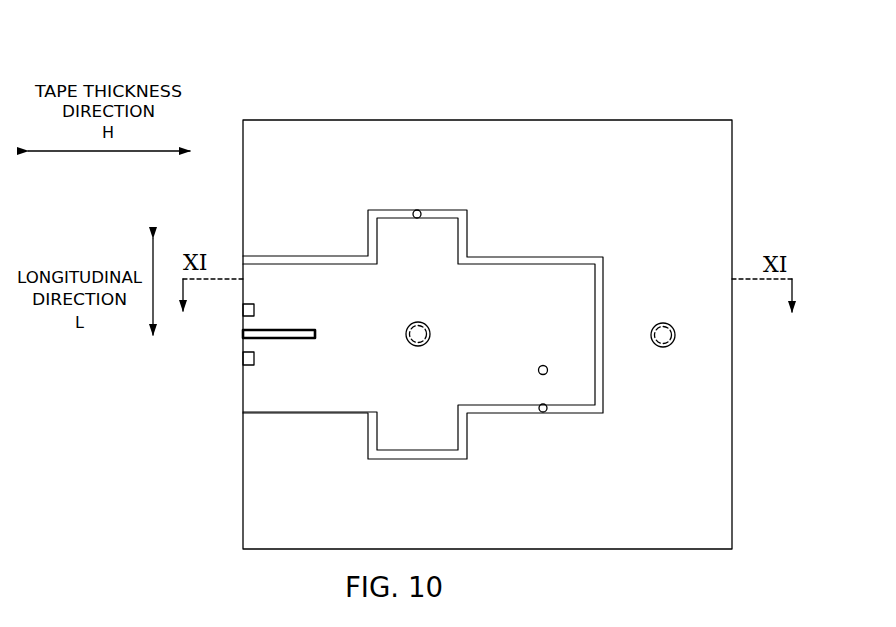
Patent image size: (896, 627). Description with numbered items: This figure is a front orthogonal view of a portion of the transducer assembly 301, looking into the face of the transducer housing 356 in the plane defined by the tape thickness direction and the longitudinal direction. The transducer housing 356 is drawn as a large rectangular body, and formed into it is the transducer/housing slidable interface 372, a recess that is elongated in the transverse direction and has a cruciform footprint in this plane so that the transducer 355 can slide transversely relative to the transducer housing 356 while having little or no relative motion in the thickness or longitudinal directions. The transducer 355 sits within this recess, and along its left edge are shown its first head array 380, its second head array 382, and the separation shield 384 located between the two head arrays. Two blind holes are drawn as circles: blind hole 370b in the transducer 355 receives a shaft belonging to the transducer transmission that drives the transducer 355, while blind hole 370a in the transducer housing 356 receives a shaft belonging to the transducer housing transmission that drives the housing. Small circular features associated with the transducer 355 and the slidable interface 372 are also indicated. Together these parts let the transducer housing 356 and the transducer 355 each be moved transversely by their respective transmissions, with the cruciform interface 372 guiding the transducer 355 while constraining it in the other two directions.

The transducer assembly 301 is at (738, 70).
The transducer 355 is at (548, 372).
The transducer housing 356 is at (732, 357).
The blind hole 370a is at (666, 323).
The blind hole 370b is at (430, 333).
The transducer/housing slidable interface 372 is at (421, 212).
The first head array 380 is at (243, 311).
The second head array 382 is at (243, 358).
The separation shield 384 is at (243, 334).